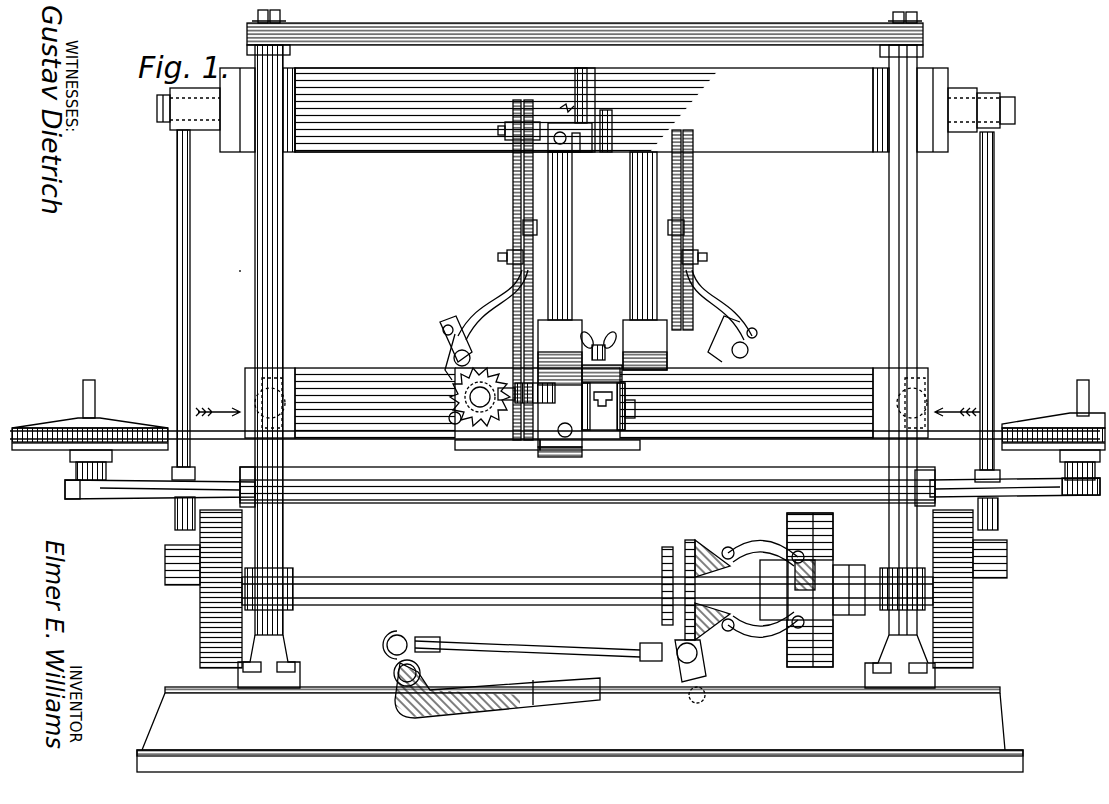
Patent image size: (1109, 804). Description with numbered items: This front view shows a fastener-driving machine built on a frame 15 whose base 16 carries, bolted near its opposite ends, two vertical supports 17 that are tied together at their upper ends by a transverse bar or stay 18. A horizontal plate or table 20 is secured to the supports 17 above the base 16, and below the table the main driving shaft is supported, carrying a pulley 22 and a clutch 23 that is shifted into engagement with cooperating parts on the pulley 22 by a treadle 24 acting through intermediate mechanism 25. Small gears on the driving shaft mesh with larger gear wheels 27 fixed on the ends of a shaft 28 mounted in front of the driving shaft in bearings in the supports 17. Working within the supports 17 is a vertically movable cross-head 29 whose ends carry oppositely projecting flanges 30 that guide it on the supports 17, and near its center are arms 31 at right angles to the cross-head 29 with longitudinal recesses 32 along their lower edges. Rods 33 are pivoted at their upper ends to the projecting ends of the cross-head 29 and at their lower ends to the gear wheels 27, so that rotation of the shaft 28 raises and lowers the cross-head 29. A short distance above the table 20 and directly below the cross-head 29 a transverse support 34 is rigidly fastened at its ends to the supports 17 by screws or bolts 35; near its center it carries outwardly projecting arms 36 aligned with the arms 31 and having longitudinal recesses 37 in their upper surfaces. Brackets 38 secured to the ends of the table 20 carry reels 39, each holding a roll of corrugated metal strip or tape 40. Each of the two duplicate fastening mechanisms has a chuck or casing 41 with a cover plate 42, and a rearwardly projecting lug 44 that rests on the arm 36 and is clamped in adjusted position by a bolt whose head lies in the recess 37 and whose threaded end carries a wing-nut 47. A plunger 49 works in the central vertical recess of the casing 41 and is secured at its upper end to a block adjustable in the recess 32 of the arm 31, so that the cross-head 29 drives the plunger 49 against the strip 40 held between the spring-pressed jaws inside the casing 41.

The frame 15 is at (226, 283).
The base 16 is at (580, 729).
The vertical supports 17 is at (284, 270).
The transverse bar or stay 18 is at (720, 30).
The horizontal plate or table 20 is at (338, 480).
The pulley 22 is at (826, 532).
The clutch 23 is at (712, 552).
The treadle 24 is at (512, 708).
The intermediate mechanism 25 is at (565, 646).
The larger gear wheels 27 is at (200, 610).
The shaft 28 is at (454, 578).
The cross-head 29 is at (584, 110).
The flanges 30 is at (246, 154).
The members or arms 31 is at (578, 70).
The longitudinal recesses 32 is at (590, 153).
The rods 33 is at (177, 230).
The transverse support 34 is at (372, 362).
The screws or bolts 35 is at (282, 378).
The members or arms 36 is at (618, 440).
The longitudinal recesses 37 is at (600, 432).
The brackets 38 is at (142, 500).
The reels 39 is at (58, 452).
The metal strip or tape 40 is at (105, 440).
The chuck or casing 41 is at (602, 388).
The cover plate 42 is at (540, 330).
The lug 44 is at (622, 375).
The wing-nut 47 is at (598, 339).
The plunger 49 is at (630, 206).